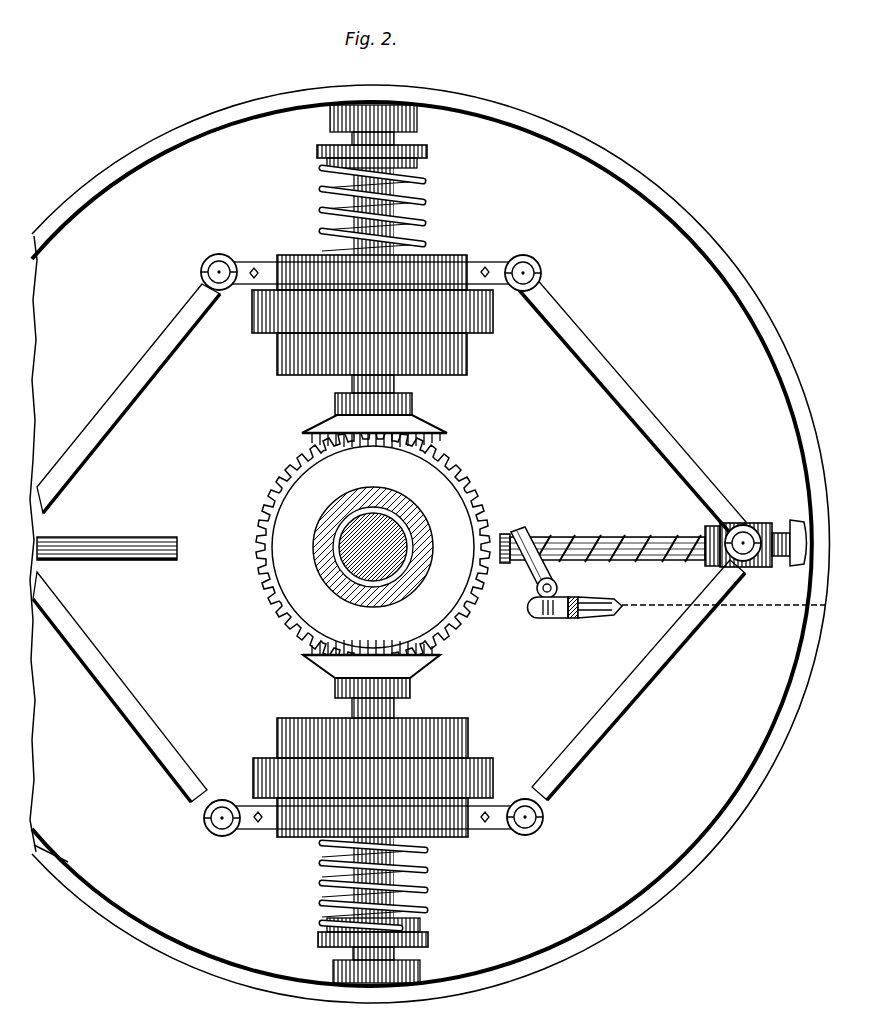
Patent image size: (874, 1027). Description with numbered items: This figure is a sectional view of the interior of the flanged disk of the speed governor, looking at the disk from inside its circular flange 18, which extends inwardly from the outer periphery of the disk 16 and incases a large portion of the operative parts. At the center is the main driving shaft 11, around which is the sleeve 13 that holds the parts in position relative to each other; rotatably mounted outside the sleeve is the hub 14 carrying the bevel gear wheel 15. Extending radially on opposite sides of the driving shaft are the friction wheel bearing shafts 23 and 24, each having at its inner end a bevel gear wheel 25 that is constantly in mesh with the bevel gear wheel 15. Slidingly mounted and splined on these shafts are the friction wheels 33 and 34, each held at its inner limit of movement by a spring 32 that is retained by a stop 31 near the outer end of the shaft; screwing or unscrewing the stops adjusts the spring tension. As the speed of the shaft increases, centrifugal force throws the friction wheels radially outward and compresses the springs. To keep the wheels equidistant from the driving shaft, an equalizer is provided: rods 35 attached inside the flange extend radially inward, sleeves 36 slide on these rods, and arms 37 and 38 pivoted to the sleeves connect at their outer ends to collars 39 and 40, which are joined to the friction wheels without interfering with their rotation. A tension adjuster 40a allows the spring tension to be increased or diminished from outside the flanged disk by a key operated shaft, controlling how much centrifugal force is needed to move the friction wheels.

The main driving shaft 11 is at (406, 542).
The sleeve 13 is at (410, 556).
The hub 14 is at (400, 576).
The bevel gear wheel 15 is at (402, 596).
The disk 16 is at (664, 617).
The circular flange 18 is at (188, 938).
The friction wheel bearing shaft 23 is at (394, 383).
The friction wheel bearing shaft 24 is at (394, 708).
The bevel gear wheel 25 is at (440, 431).
The stop 31 is at (318, 151).
The spring 32 is at (323, 190).
The friction wheel 33 is at (494, 319).
The friction wheel 34 is at (496, 770).
The rod 35 is at (137, 538).
The sleeve 36 is at (755, 525).
The arm 37 is at (657, 404).
The arm 38 is at (389, 694).
The collar 39 is at (503, 267).
The collar 40 is at (494, 830).
The tension adjuster 40a is at (549, 572).